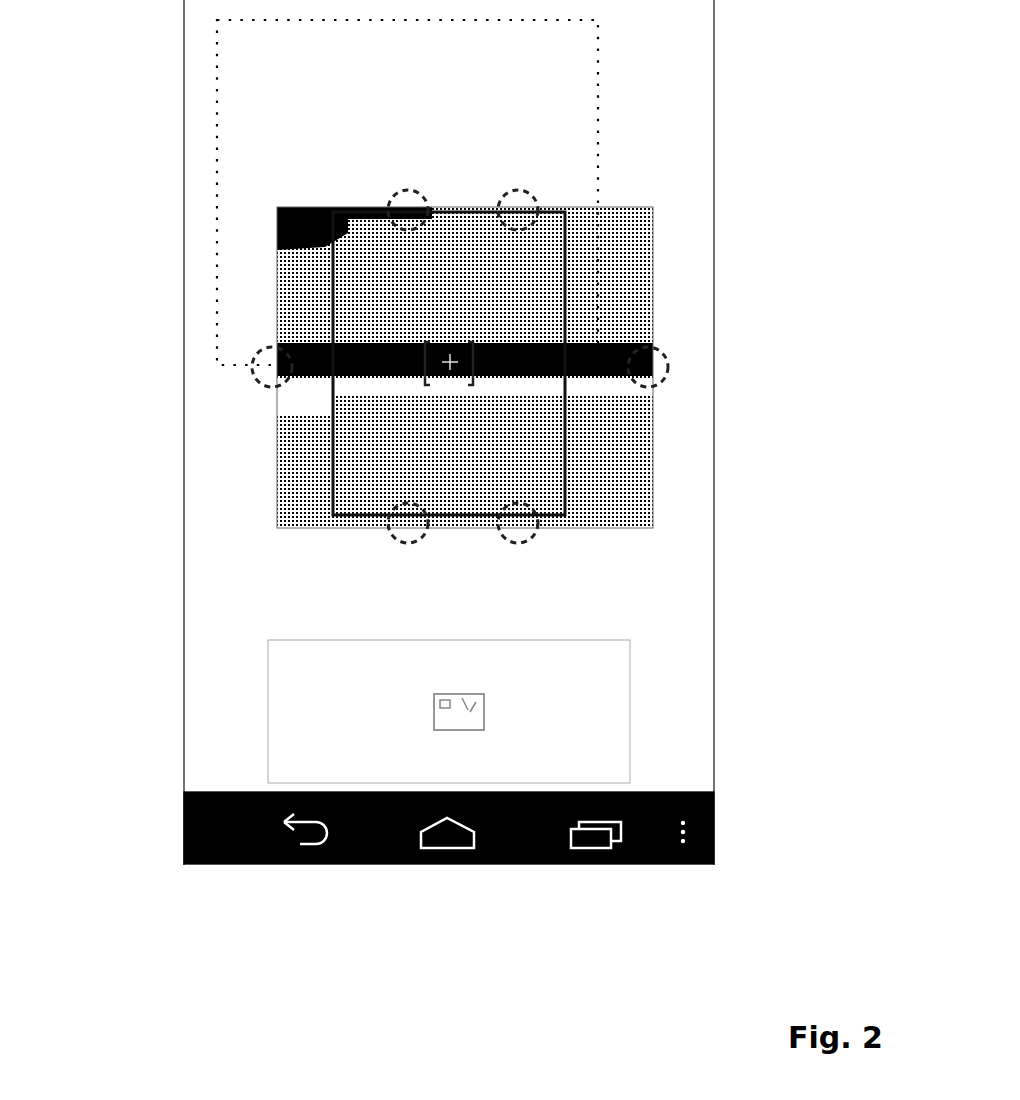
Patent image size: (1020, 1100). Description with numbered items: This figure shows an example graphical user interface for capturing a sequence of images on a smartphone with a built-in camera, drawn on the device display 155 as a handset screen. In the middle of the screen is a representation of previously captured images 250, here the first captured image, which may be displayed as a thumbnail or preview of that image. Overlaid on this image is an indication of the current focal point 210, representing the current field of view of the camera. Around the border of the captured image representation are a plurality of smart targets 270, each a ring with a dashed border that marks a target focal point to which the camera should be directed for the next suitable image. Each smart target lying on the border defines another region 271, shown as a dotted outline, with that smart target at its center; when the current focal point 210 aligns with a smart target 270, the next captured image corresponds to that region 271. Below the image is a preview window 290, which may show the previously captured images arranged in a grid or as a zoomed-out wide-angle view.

The mobile device 155 is at (182, 305).
The current focal point 210 is at (478, 375).
The representation of previously captured images 250 is at (277, 513).
The smart target 270 is at (380, 200).
The region 271 is at (213, 192).
The preview window 290 is at (633, 715).